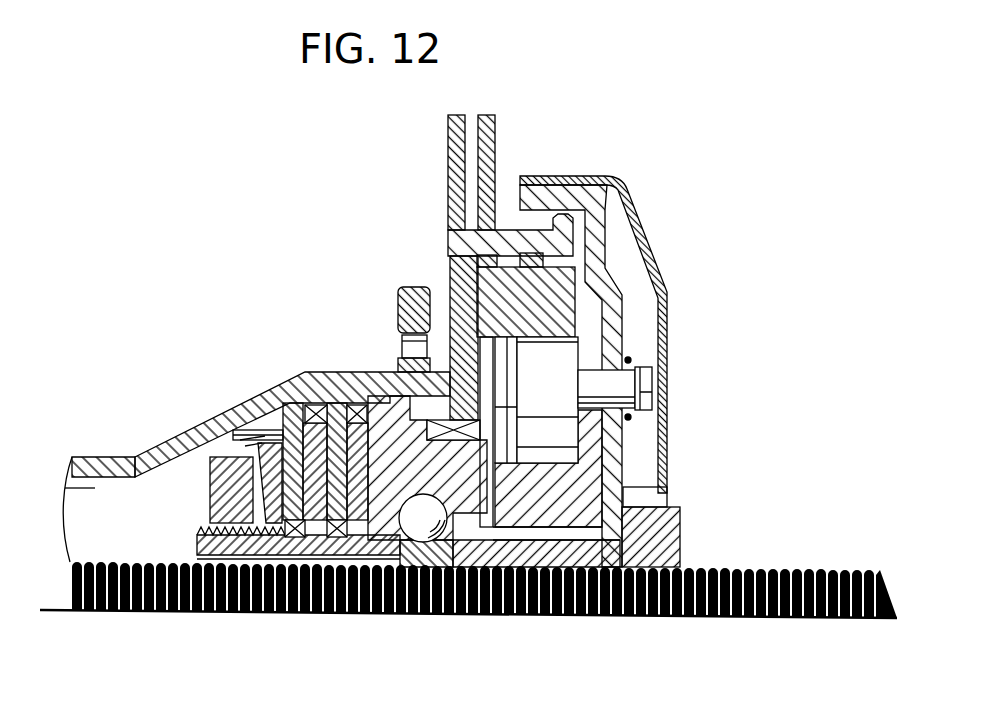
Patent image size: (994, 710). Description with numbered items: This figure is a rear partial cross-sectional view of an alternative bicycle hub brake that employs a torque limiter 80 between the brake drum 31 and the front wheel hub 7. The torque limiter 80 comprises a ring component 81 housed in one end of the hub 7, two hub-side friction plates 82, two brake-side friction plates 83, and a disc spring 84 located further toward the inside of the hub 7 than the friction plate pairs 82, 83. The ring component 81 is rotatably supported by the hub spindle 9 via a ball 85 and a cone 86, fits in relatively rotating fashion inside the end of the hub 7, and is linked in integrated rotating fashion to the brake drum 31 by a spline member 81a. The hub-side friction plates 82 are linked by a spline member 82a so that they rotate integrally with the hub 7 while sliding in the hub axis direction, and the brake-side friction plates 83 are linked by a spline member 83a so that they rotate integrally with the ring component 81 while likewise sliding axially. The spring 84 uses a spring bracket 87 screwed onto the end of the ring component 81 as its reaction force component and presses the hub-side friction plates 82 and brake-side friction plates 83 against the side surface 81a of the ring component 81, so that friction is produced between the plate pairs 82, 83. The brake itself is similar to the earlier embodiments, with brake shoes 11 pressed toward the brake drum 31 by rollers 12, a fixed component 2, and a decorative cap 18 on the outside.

The fixed component 2 is at (603, 210).
The front wheel hub 7 is at (97, 457).
The hub spindle 9 is at (786, 567).
The brake shoes 11 is at (560, 287).
The rollers 12 is at (560, 440).
The decorative cap 18 is at (670, 316).
The brake drum 31 is at (453, 243).
The torque limiter 80 is at (230, 245).
The ring component 81 is at (388, 372).
The spline member 81a is at (470, 545).
The hub-side friction plates 82 is at (318, 540).
The spline member 82a is at (353, 370).
The brake-side friction plates 83 is at (332, 370).
The spline member 83a is at (300, 538).
The disc spring 84 is at (197, 427).
The ball 85 is at (428, 543).
The cone 86 is at (527, 567).
The spring bracket 87 is at (210, 492).